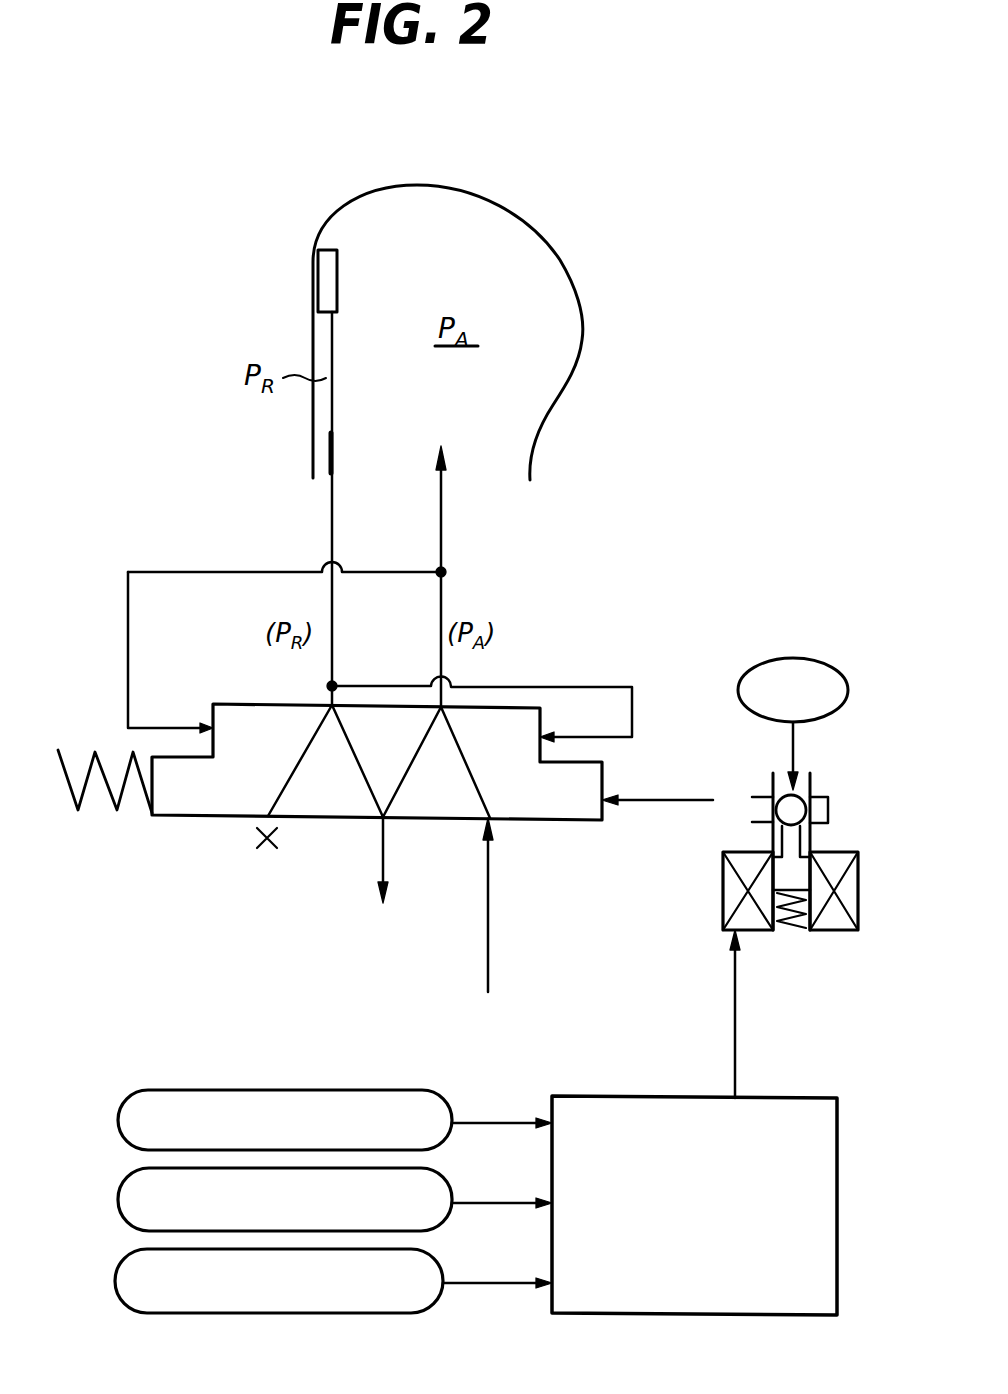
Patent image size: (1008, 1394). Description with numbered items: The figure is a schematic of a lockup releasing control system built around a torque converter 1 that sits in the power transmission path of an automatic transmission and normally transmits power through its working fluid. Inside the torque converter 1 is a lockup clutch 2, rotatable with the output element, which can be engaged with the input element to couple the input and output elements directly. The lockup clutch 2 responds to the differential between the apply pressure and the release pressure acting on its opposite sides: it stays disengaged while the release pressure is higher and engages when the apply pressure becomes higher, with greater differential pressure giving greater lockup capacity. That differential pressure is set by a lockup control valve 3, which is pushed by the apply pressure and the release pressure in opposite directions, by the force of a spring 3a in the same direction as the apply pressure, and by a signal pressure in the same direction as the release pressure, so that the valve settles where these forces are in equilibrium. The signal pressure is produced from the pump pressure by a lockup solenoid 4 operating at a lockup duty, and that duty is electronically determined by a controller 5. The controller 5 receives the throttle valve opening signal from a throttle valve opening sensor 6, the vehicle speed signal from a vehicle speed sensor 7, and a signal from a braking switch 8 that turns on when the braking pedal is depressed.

The torque converter 1 is at (560, 257).
The lockup clutch 2 is at (337, 315).
The lockup control valve 3 is at (190, 816).
The spring 3a is at (70, 793).
The lockup solenoid 4 is at (832, 931).
The controller 5 is at (837, 1225).
The throttle valve opening sensor 6 is at (118, 1121).
The vehicle speed sensor 7 is at (118, 1201).
The braking switch 8 is at (115, 1281).